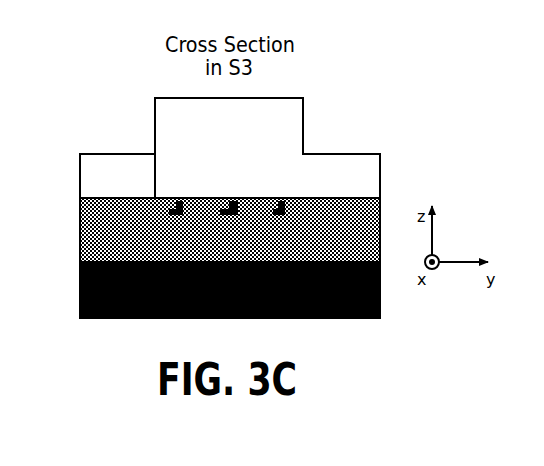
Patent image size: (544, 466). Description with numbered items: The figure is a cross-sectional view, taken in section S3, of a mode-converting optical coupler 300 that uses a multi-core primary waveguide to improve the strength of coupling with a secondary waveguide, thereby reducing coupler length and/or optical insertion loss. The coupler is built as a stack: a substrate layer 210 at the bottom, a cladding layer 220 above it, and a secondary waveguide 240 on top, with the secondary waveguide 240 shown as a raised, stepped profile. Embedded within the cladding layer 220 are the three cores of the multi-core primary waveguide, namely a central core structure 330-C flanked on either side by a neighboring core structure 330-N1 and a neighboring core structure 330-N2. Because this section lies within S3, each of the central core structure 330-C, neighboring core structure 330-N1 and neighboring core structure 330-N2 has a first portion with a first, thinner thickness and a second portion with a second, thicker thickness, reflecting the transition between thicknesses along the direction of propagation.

The mode-converting optical coupler 300 is at (122, 75).
The secondary waveguide 240 is at (125, 182).
The cladding layer 220 is at (125, 226).
The substrate layer 210 is at (125, 290).
The central core structure 330-C is at (235, 198).
The neighboring core structure 330-N1 is at (179, 216).
The neighboring core structure 330-N2 is at (281, 216).